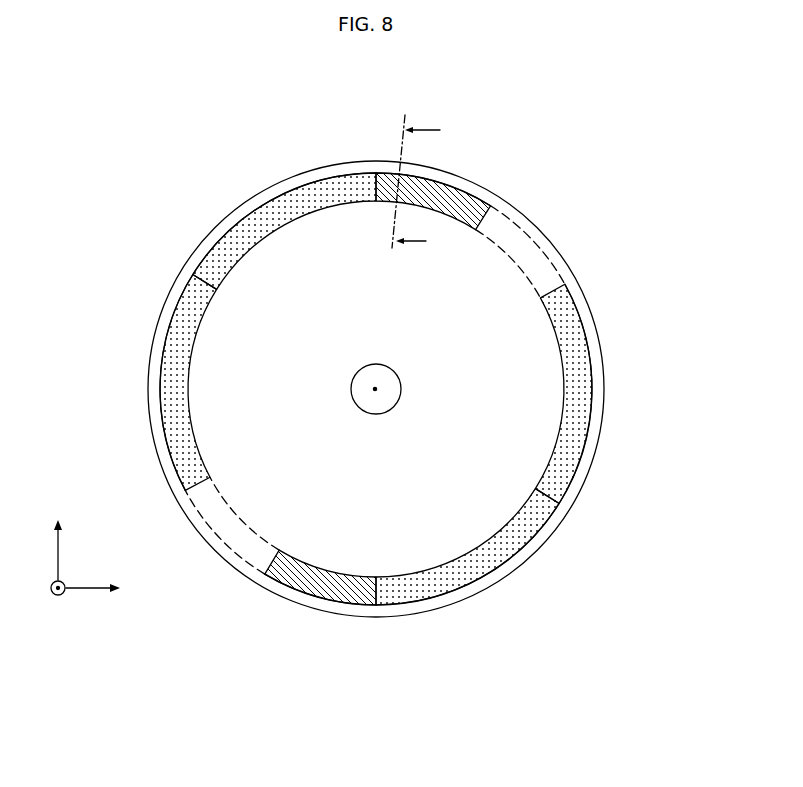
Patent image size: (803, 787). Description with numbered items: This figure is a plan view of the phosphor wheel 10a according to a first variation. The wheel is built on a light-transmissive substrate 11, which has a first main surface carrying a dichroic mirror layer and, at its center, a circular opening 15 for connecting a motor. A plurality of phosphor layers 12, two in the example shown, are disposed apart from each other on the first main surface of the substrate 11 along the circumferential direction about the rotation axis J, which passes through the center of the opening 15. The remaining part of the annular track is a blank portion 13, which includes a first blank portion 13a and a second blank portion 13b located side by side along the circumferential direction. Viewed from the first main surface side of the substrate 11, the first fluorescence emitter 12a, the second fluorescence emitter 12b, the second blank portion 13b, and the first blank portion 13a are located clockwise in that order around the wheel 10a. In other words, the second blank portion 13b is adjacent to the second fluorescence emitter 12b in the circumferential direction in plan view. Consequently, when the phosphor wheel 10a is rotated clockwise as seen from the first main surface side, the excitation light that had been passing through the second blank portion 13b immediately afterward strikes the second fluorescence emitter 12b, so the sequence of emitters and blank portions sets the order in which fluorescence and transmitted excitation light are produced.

The phosphor wheel 10a is at (593, 118).
The substrate 11 is at (596, 330).
The phosphor layers 12 is at (95, 208).
The first fluorescence emitter 12a is at (190, 306).
The second fluorescence emitter 12b is at (215, 247).
The blank portion 13 is at (581, 184).
The first blank portion 13a is at (518, 228).
The second blank portion 13b is at (468, 205).
The circular opening 15 is at (356, 390).
The rotation axis J is at (376, 388).